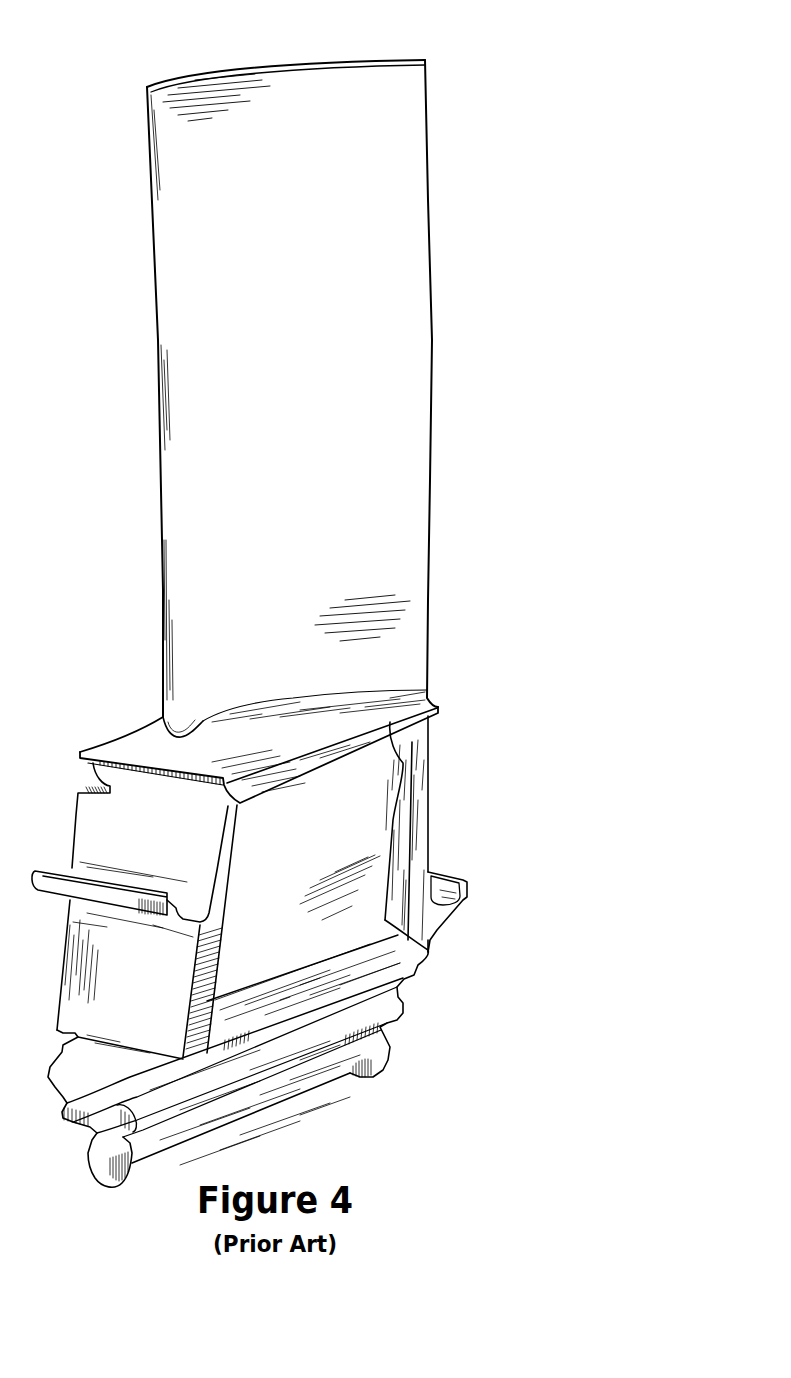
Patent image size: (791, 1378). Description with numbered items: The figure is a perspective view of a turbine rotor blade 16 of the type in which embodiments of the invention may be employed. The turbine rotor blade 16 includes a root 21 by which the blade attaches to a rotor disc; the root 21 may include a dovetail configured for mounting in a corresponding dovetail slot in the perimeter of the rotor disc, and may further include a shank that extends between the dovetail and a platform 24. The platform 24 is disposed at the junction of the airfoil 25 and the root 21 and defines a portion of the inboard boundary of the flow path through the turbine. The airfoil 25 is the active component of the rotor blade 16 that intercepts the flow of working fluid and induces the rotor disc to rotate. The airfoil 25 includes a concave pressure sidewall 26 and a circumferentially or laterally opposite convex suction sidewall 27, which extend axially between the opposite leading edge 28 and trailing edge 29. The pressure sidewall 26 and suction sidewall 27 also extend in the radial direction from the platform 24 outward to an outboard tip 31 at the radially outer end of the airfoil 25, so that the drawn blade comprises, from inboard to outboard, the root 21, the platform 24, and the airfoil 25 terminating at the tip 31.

The turbine rotor blade 16 is at (332, 593).
The root 21 is at (472, 993).
The platform 24 is at (153, 770).
The airfoil 25 is at (327, 368).
The concave pressure sidewall 26 is at (315, 459).
The convex suction sidewall 27 is at (457, 520).
The leading edge 28 is at (158, 370).
The trailing edge 29 is at (432, 397).
The outboard tip 31 is at (225, 74).